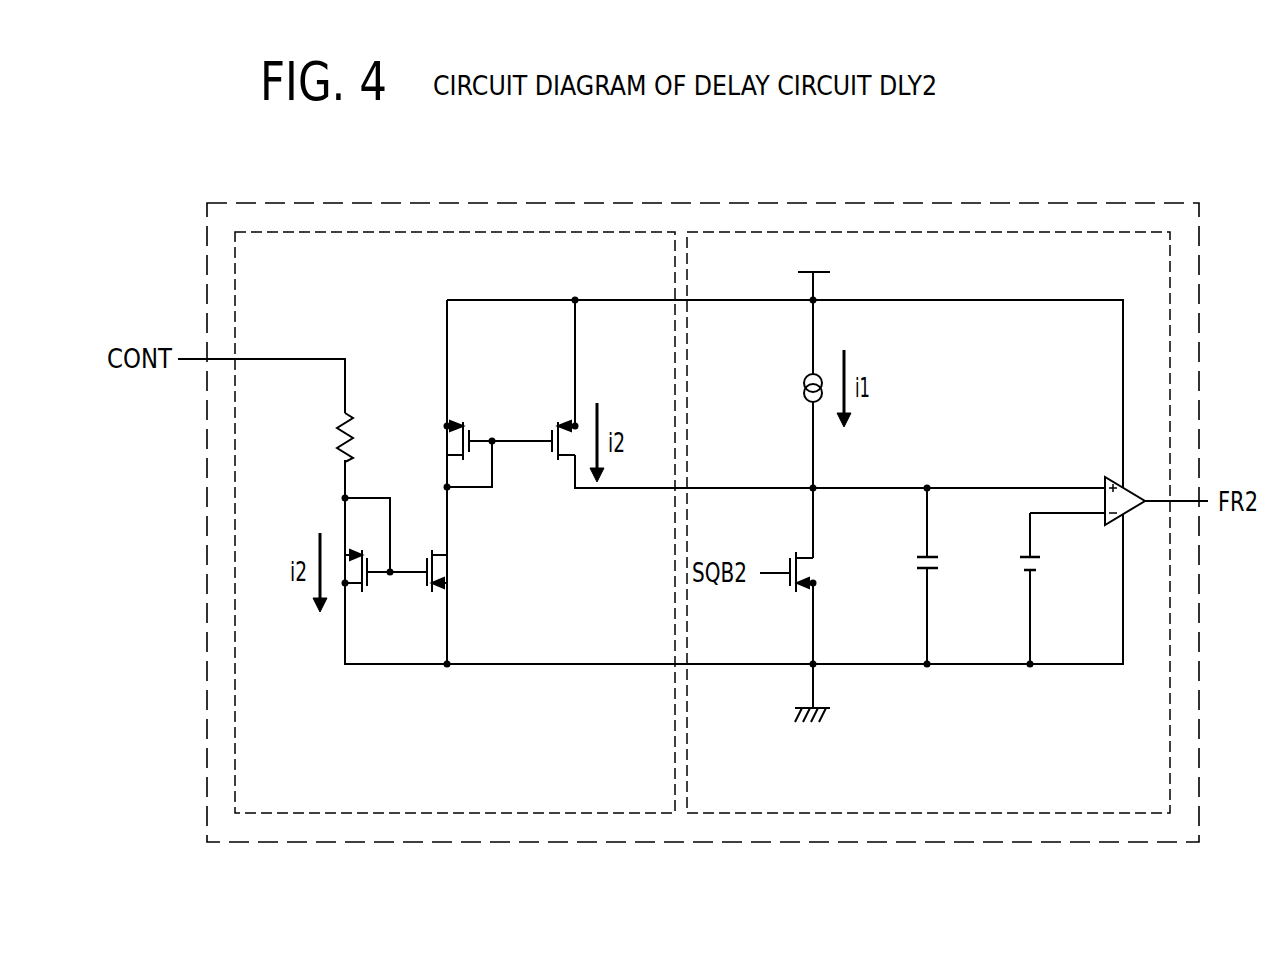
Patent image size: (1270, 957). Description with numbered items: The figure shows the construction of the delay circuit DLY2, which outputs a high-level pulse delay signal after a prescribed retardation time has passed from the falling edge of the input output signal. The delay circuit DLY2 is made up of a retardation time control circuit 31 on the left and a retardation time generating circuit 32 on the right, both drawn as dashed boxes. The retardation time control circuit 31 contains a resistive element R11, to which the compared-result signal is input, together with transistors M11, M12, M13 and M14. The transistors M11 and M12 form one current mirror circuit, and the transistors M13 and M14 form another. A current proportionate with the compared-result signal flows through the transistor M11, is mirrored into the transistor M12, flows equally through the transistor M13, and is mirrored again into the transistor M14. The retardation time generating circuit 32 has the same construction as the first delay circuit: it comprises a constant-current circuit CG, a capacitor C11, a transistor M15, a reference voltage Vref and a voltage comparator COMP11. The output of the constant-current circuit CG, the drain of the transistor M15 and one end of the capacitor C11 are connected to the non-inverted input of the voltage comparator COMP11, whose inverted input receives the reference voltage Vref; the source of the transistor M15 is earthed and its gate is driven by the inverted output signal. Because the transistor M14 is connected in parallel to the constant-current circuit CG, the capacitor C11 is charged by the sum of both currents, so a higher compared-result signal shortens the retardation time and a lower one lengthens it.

The retardation time control circuit 31 is at (418, 232).
The retardation time generating circuit 32 is at (940, 232).
The delay circuit DLY2 is at (689, 203).
The resistive element R11 is at (319, 437).
The transistor M11 is at (386, 586).
The transistor M12 is at (463, 571).
The transistor M13 is at (499, 438).
The transistor M14 is at (545, 457).
The transistor M15 is at (813, 572).
The constant-current circuit CG is at (789, 388).
The capacitor C11 is at (950, 562).
The reference voltage Vref is at (1058, 560).
The voltage comparator COMP11 is at (1073, 481).